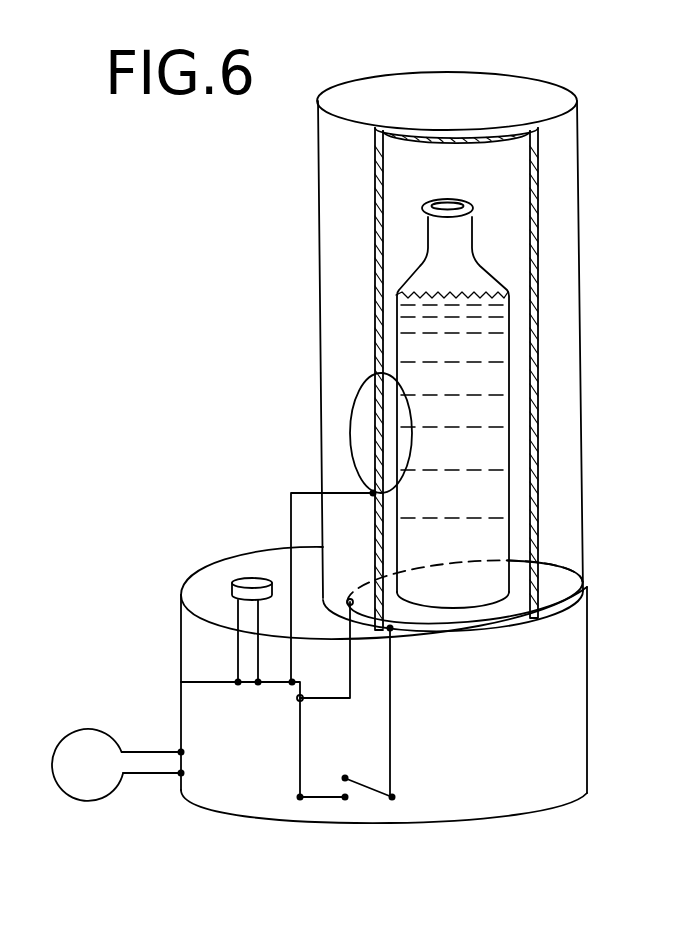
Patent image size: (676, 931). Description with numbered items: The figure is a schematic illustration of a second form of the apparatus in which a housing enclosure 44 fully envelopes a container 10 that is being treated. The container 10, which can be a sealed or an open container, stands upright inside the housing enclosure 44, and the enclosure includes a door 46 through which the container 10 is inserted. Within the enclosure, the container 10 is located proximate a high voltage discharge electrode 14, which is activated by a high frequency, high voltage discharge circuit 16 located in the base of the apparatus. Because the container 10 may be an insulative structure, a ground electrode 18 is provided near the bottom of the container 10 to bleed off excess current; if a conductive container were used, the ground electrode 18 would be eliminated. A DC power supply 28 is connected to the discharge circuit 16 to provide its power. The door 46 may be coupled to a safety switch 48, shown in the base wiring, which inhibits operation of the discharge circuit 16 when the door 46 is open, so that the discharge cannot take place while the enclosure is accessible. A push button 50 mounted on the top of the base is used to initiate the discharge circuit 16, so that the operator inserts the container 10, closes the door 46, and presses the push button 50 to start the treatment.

The container 10 is at (480, 265).
The high voltage discharge electrode 14 is at (352, 413).
The high frequency, high voltage discharge circuit 16 is at (190, 701).
The ground electrode 18 is at (520, 585).
The DC power supply 28 is at (93, 727).
The housing enclosure 44 is at (332, 173).
The door 46 is at (400, 245).
The safety switch 48 is at (363, 783).
The push button 50 is at (237, 580).